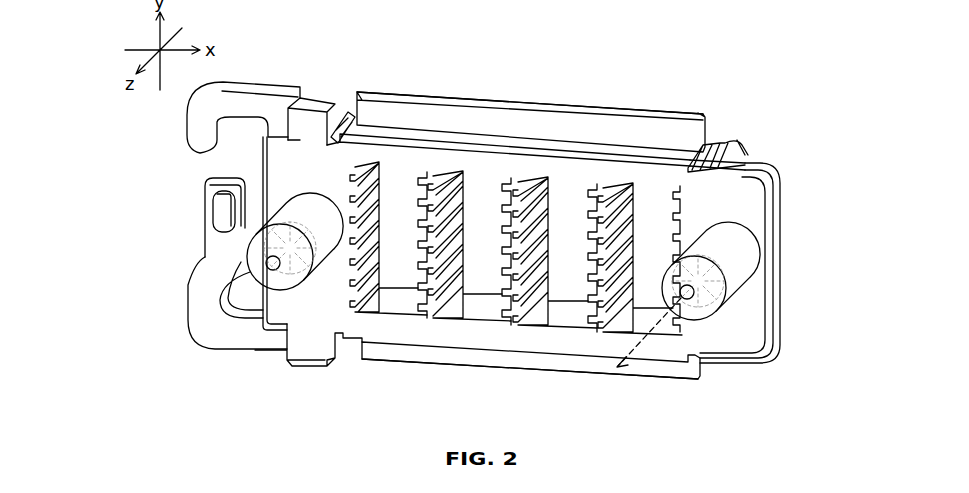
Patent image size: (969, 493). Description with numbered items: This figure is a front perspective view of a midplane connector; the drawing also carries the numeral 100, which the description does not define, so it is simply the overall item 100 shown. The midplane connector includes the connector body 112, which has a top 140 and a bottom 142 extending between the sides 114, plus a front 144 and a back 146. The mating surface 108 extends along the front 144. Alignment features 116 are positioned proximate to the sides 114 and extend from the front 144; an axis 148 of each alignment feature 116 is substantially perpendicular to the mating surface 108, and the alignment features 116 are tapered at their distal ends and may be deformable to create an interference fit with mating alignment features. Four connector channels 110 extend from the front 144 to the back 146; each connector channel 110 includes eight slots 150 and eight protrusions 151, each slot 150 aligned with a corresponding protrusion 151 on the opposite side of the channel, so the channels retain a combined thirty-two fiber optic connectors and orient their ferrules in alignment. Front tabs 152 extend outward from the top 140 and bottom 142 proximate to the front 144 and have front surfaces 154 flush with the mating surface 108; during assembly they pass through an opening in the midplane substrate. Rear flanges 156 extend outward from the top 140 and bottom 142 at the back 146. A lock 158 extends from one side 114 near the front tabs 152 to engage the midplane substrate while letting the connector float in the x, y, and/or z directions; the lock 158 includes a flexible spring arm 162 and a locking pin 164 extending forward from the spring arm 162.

The assembly 100 is at (670, 24).
The mating surface 108 is at (737, 347).
The connector channel 110 is at (516, 192).
The connector body 112 is at (747, 183).
The side 114 is at (146, 162).
The alignment feature 116 is at (247, 268).
The top 140 is at (398, 62).
The bottom 142 is at (395, 387).
The front 144 is at (565, 389).
The back 146 is at (682, 92).
The axis 148 is at (647, 343).
The slot 150 is at (548, 203).
The protrusion 151 is at (563, 200).
The front tab 152 is at (317, 100).
The front surface 154 is at (305, 124).
The rear flange 156 is at (420, 95).
The lock 158 is at (210, 332).
The spring arm 162 is at (220, 248).
The locking pin 164 is at (217, 217).